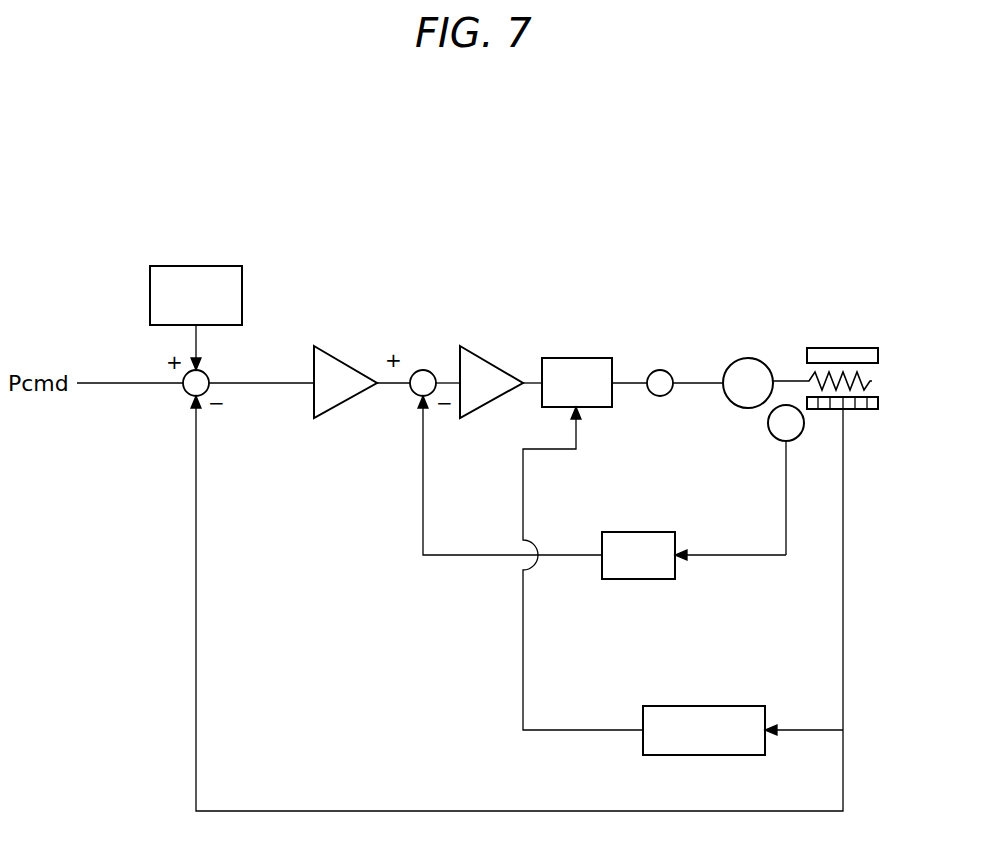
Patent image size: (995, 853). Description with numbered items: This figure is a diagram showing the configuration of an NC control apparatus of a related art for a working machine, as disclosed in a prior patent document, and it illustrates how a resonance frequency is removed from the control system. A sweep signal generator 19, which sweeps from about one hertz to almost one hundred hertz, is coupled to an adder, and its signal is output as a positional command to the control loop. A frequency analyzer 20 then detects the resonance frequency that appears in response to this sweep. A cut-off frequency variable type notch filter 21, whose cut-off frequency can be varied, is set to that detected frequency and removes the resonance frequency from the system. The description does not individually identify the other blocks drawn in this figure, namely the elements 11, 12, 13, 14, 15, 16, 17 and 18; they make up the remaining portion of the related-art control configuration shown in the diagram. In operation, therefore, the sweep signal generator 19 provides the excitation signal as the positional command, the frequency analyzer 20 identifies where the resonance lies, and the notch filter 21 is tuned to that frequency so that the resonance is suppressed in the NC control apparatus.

The position loop gain amplifier Kp 11 is at (338, 353).
The velocity loop gain amplifier Kv 12 is at (483, 353).
The motor 13 is at (752, 358).
The filter 14 is at (578, 358).
The stationary member 15 is at (840, 348).
The elastic element (spring) 16 is at (870, 385).
The linear scale 17 is at (869, 410).
The speed detector 18 is at (638, 532).
The sweep signal generator 19 is at (193, 266).
The frequency analyzer 20 is at (703, 706).
The cut-off frequency variable type notch filter 21 is at (773, 437).